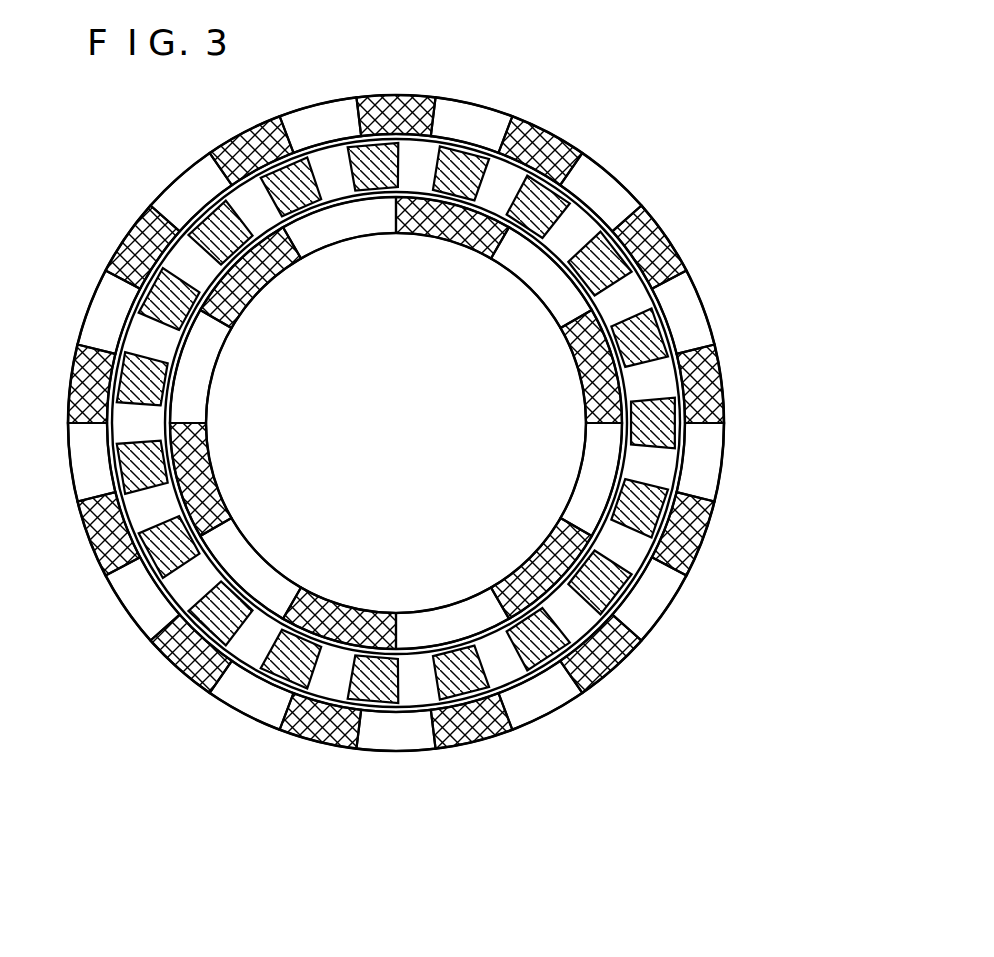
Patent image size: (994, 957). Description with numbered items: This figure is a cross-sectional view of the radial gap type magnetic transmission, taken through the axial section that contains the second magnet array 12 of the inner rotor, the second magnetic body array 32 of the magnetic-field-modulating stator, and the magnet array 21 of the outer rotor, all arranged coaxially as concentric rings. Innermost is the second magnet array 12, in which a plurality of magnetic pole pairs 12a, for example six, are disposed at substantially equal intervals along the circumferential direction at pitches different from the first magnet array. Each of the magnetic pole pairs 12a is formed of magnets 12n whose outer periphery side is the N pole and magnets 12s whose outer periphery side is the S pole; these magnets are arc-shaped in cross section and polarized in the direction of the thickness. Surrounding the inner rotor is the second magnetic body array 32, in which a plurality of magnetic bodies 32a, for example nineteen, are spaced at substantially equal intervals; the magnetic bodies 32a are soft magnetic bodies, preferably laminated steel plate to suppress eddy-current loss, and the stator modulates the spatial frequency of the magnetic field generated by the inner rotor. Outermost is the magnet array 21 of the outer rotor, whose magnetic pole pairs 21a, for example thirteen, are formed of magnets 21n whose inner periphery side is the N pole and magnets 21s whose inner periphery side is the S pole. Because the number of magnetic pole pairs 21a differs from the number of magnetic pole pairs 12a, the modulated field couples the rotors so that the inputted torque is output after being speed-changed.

The second magnet array 12 is at (330, 527).
The magnetic pole pairs 12a is at (396, 527).
The magnets 12n is at (550, 573).
The magnets 12s is at (480, 620).
The magnet array 21 is at (488, 426).
The magnetic pole pairs 21a is at (488, 426).
The magnets 21n is at (720, 392).
The magnets 21s is at (700, 457).
The second magnetic body array 32 is at (455, 423).
The magnetic bodies 32a is at (643, 338).